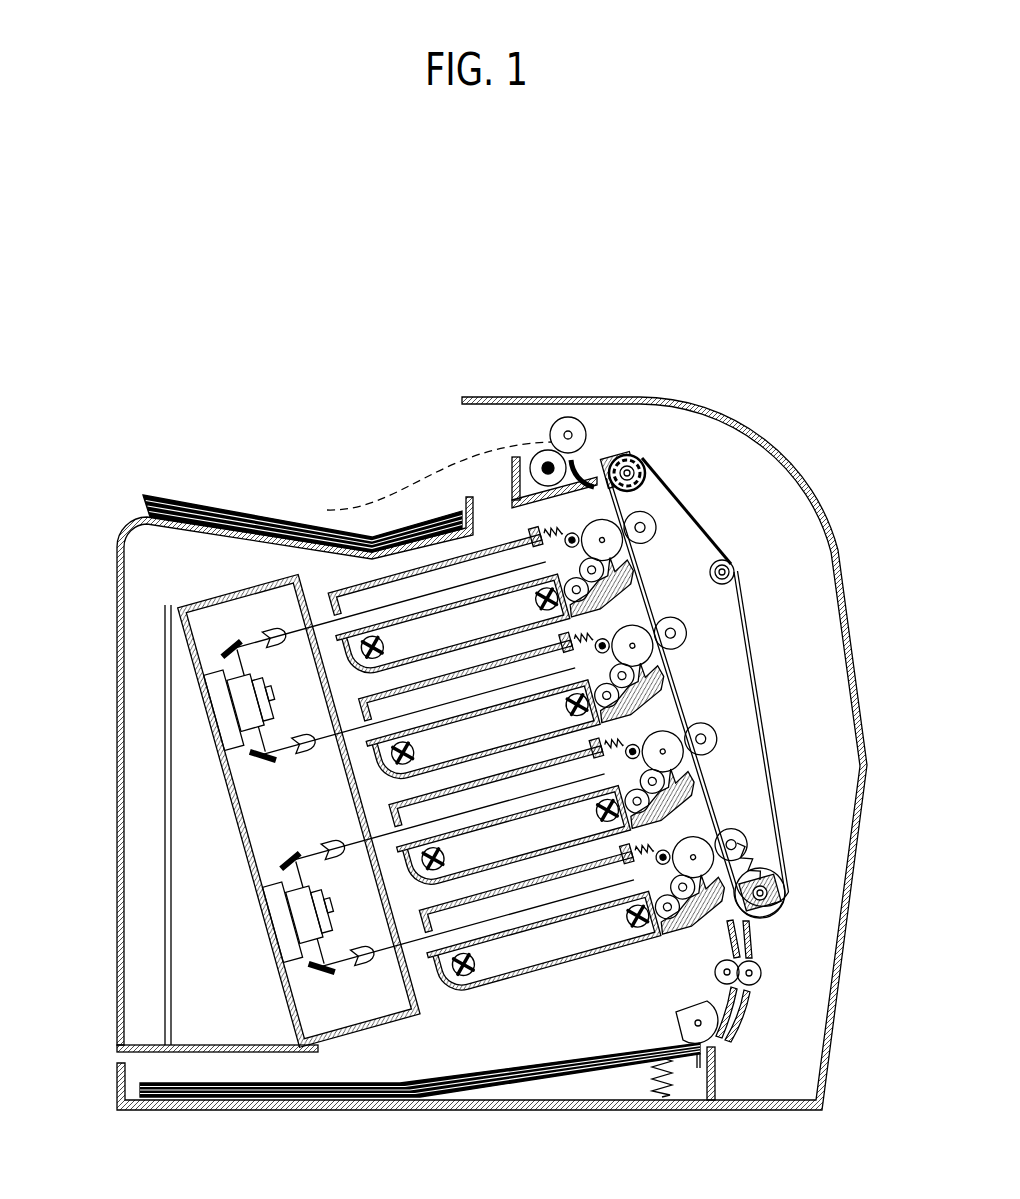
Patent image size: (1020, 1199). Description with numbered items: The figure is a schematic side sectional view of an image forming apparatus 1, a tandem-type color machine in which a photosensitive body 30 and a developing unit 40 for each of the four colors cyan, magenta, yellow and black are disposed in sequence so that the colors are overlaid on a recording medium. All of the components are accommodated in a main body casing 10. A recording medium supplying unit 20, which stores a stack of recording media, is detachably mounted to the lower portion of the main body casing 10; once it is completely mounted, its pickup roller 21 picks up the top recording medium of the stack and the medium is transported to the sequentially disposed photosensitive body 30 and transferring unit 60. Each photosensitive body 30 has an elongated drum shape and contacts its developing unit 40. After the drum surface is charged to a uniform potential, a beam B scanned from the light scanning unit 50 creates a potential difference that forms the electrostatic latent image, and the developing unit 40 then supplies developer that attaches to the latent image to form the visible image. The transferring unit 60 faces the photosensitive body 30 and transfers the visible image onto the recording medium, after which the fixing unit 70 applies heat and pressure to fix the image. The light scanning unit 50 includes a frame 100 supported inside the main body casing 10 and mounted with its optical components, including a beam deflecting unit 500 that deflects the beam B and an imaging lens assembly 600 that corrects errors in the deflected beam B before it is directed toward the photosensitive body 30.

The image forming apparatus 1 is at (262, 398).
The main body casing 10 is at (842, 575).
The recording medium supplying unit 20 is at (726, 1056).
The pickup roller 21 is at (693, 1033).
The photosensitive body 30 is at (620, 508).
The developing unit 40 is at (445, 997).
The light scanning unit 50 is at (288, 1026).
The transferring unit 60 is at (658, 462).
The fixing unit 70 is at (533, 428).
The frame 100 is at (290, 930).
The beam deflecting unit 500 is at (232, 676).
The imaging lens assembly 600 is at (274, 634).
The beam B is at (215, 606).